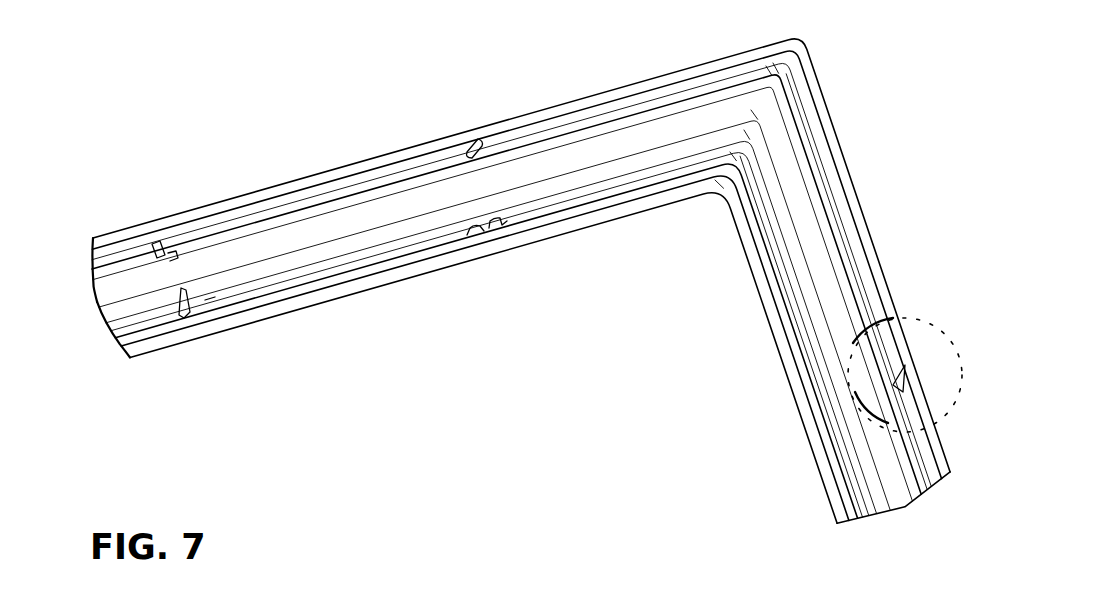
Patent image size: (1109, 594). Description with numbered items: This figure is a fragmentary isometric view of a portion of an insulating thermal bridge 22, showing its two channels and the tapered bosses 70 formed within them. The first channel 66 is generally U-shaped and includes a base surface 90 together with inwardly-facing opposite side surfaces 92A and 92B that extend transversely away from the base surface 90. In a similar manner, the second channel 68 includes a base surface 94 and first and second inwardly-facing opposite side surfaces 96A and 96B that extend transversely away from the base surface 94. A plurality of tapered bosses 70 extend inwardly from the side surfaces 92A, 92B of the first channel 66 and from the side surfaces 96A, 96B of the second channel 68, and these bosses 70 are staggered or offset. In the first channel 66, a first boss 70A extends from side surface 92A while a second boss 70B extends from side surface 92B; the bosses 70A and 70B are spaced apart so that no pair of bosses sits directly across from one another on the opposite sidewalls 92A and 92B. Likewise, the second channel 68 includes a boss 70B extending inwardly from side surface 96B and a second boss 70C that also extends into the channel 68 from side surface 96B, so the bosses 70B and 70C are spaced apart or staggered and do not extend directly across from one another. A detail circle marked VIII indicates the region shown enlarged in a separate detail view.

The raceway / duct body 22 is at (838, 151).
The first channel 66 is at (344, 200).
The second channel 68 is at (262, 302).
The tapered bosses 70 is at (905, 372).
The first boss 70A is at (170, 252).
The second boss 70B is at (468, 150).
The second boss 70C is at (188, 320).
The base surface 90 is at (95, 268).
The side surface 92A is at (141, 247).
The side surface 92B is at (530, 130).
The base surface 94 is at (113, 343).
The first side surface 96A is at (469, 230).
The second side surface 96B is at (210, 305).
The detail view indicator VIII is at (958, 368).